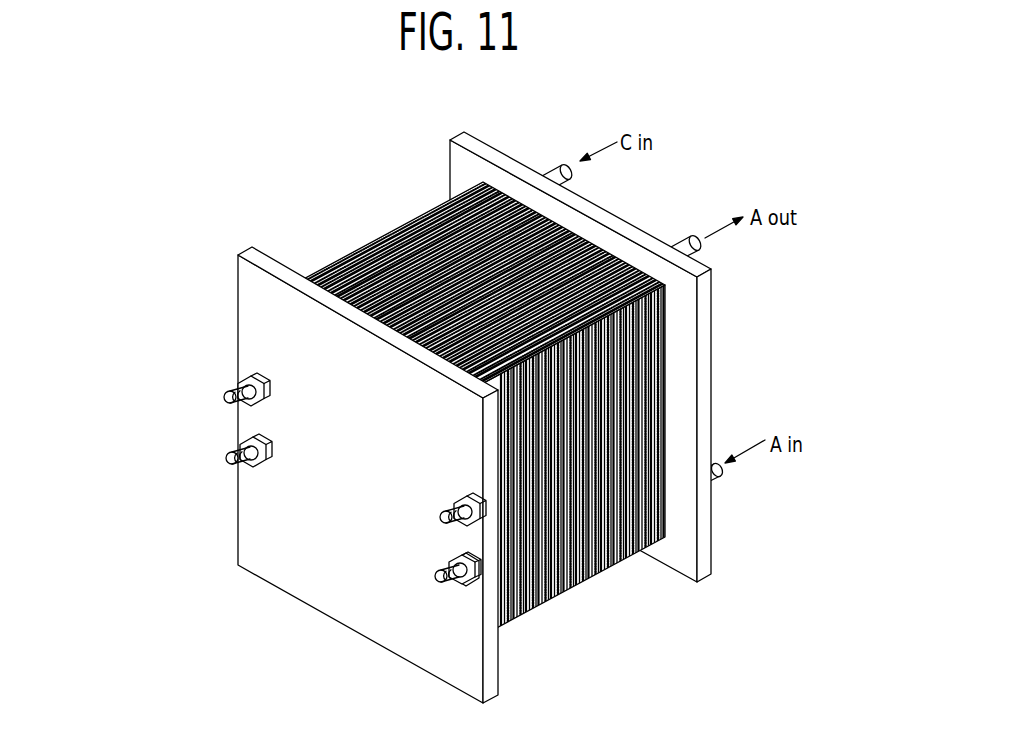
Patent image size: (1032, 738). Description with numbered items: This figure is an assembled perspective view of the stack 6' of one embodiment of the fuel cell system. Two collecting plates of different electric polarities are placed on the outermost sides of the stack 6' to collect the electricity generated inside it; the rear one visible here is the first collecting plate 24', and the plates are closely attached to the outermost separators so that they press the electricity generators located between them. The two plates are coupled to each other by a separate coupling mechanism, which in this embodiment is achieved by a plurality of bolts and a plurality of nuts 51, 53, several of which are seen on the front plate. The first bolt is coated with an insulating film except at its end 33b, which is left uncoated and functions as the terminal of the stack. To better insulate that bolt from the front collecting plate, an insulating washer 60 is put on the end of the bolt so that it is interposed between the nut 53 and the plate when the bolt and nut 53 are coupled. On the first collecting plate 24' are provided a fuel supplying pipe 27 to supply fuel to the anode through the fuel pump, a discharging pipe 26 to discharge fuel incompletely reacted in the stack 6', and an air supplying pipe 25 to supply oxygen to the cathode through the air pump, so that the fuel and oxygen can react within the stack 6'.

The stack 6' is at (463, 379).
The first collecting plate 24' is at (580, 357).
The air supplying pipe 25 is at (557, 168).
The discharging pipe 26 is at (692, 240).
The fuel supplying pipe 27 is at (715, 468).
The nut 51 is at (240, 379).
The nut 53 is at (463, 590).
The insulating washer 60 is at (478, 580).
The end of the first bolt 33b is at (442, 585).